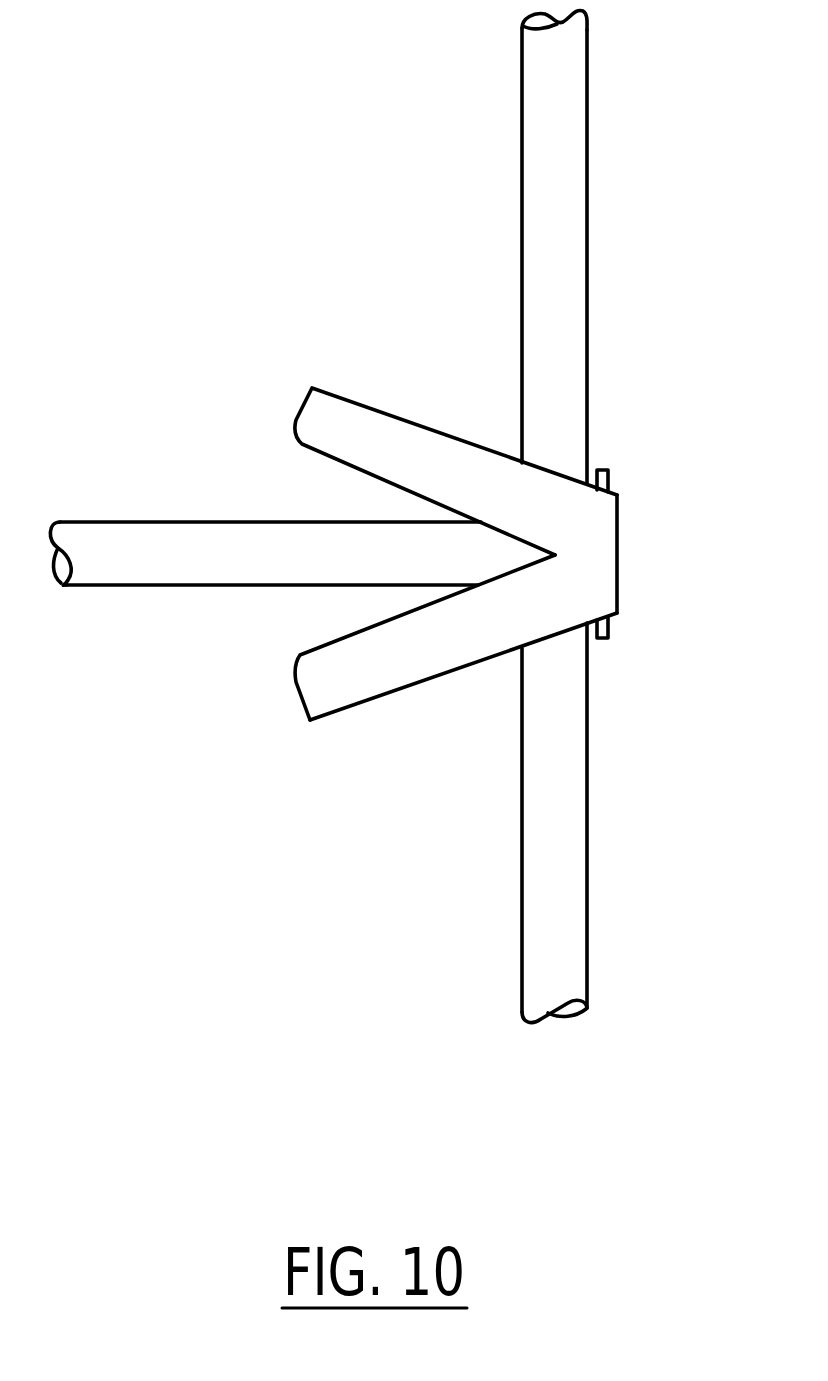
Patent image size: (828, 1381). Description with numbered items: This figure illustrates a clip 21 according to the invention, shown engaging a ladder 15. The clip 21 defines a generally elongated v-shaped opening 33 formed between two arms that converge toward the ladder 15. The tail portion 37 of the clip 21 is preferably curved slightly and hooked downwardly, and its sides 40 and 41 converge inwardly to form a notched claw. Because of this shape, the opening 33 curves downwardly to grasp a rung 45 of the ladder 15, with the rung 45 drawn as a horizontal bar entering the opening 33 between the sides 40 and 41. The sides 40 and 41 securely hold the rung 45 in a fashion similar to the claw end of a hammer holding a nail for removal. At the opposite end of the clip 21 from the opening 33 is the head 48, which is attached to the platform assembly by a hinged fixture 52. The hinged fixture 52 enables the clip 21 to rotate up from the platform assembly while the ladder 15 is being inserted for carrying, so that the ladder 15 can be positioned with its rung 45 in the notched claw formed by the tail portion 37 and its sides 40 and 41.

The ladder 15 is at (588, 60).
The rung 45 is at (160, 530).
The v-shaped opening 33 is at (441, 586).
The side 40 is at (350, 466).
The side 41 is at (372, 628).
The tail portion 37 is at (383, 672).
The head 48 is at (618, 515).
The clip 21 is at (588, 482).
The hinged fixture 52 is at (608, 620).